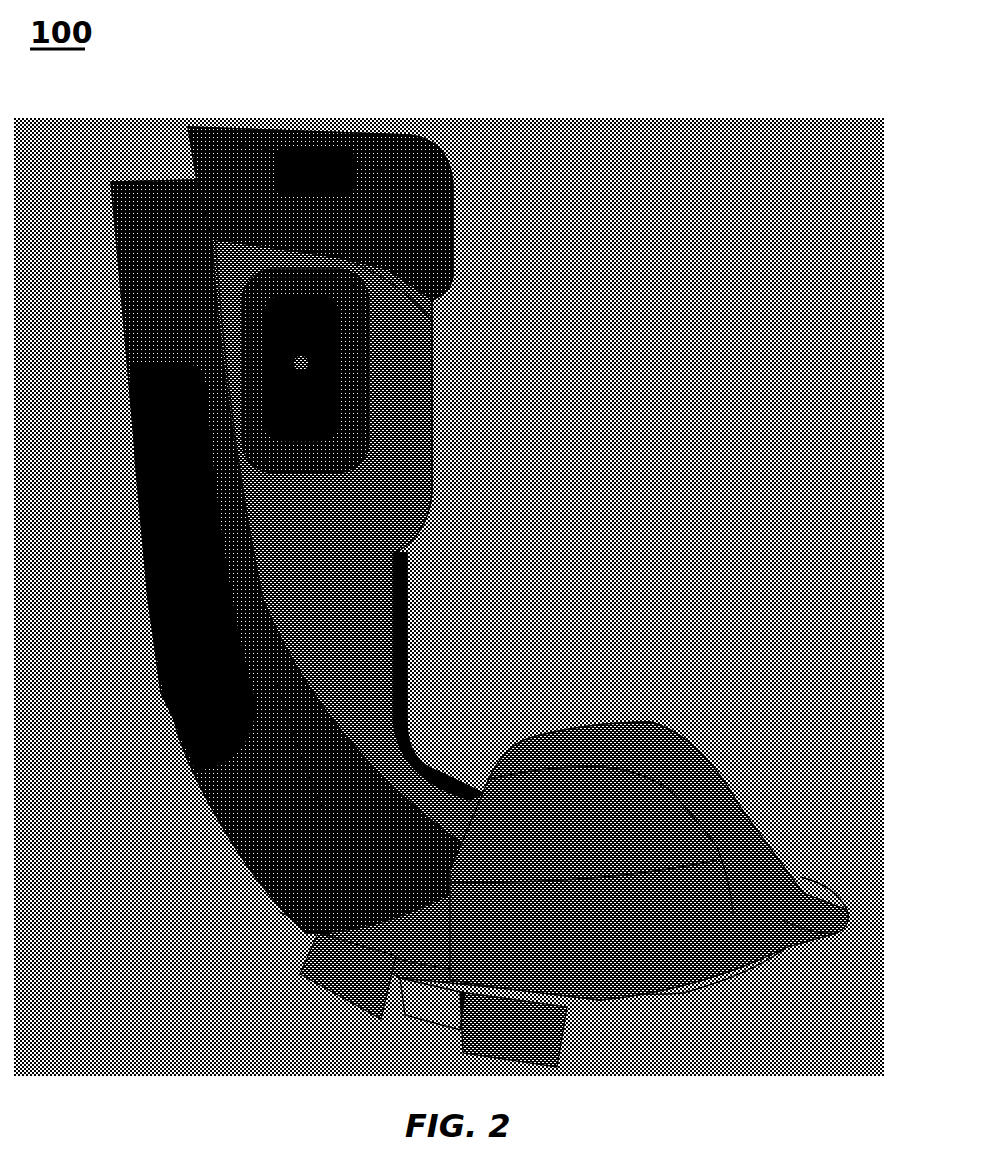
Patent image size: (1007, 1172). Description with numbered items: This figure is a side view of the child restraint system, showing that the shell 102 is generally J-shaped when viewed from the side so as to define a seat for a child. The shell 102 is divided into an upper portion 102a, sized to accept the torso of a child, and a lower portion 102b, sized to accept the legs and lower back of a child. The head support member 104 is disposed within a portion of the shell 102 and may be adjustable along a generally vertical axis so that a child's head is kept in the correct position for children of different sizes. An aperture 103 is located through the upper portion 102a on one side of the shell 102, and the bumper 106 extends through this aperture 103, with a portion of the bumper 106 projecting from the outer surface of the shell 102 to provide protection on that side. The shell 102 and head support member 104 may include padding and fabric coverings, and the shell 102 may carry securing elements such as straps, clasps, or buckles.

The shell 102 is at (353, 618).
The upper portion 102a is at (413, 275).
The lower portion 102b is at (610, 820).
The aperture 103 is at (375, 378).
The head support member 104 is at (393, 175).
The bumper 106 is at (370, 443).